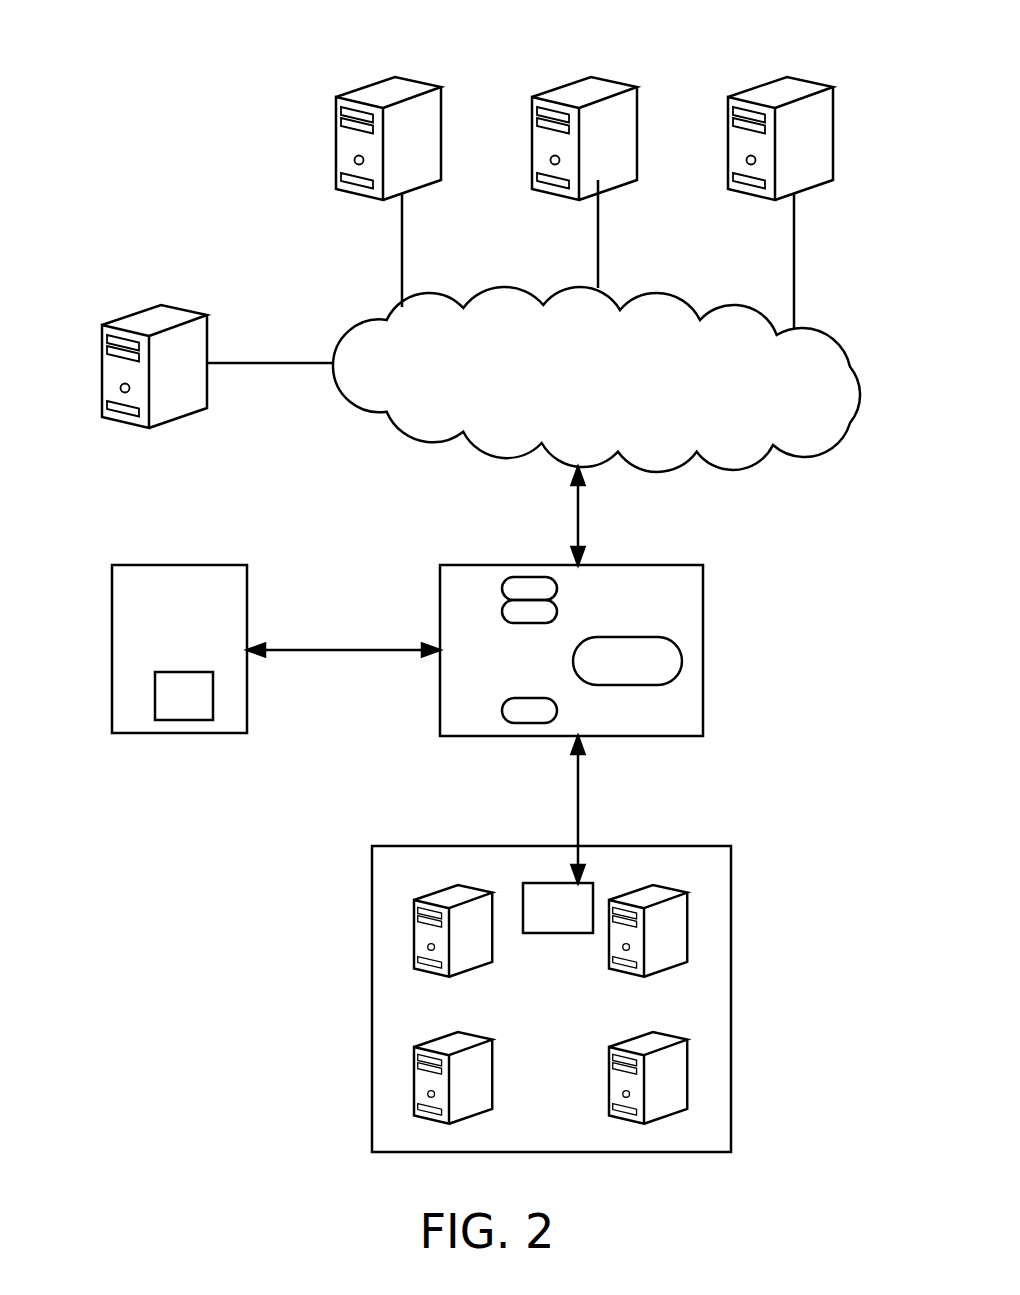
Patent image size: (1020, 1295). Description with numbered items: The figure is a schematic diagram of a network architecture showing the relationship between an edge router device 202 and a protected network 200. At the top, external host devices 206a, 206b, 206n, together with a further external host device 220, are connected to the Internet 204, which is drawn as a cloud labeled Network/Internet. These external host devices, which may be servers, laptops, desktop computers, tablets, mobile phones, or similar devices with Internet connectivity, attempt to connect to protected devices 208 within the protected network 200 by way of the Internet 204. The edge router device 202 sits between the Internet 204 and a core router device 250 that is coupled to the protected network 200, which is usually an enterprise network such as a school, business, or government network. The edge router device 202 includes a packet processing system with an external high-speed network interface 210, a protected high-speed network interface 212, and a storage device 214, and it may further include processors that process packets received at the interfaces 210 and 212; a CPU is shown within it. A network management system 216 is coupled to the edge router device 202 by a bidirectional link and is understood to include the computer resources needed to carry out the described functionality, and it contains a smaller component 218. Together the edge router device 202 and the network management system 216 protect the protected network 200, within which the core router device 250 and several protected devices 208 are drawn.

The protected network 200 is at (699, 836).
The edge router device 202 is at (692, 556).
The Internet 204 is at (830, 320).
The external host device 206a is at (381, 90).
The external host device 206b is at (577, 90).
The external host device 206n is at (773, 90).
The protected devices 208 is at (414, 937).
The external high-speed network interface 210 is at (528, 577).
The protected high-speed network interface 212 is at (518, 723).
The storage device 214 is at (497, 612).
The network management system 216 is at (118, 557).
The application / display 218 is at (173, 720).
The external host device 220 is at (145, 319).
The core router device 250 is at (545, 933).